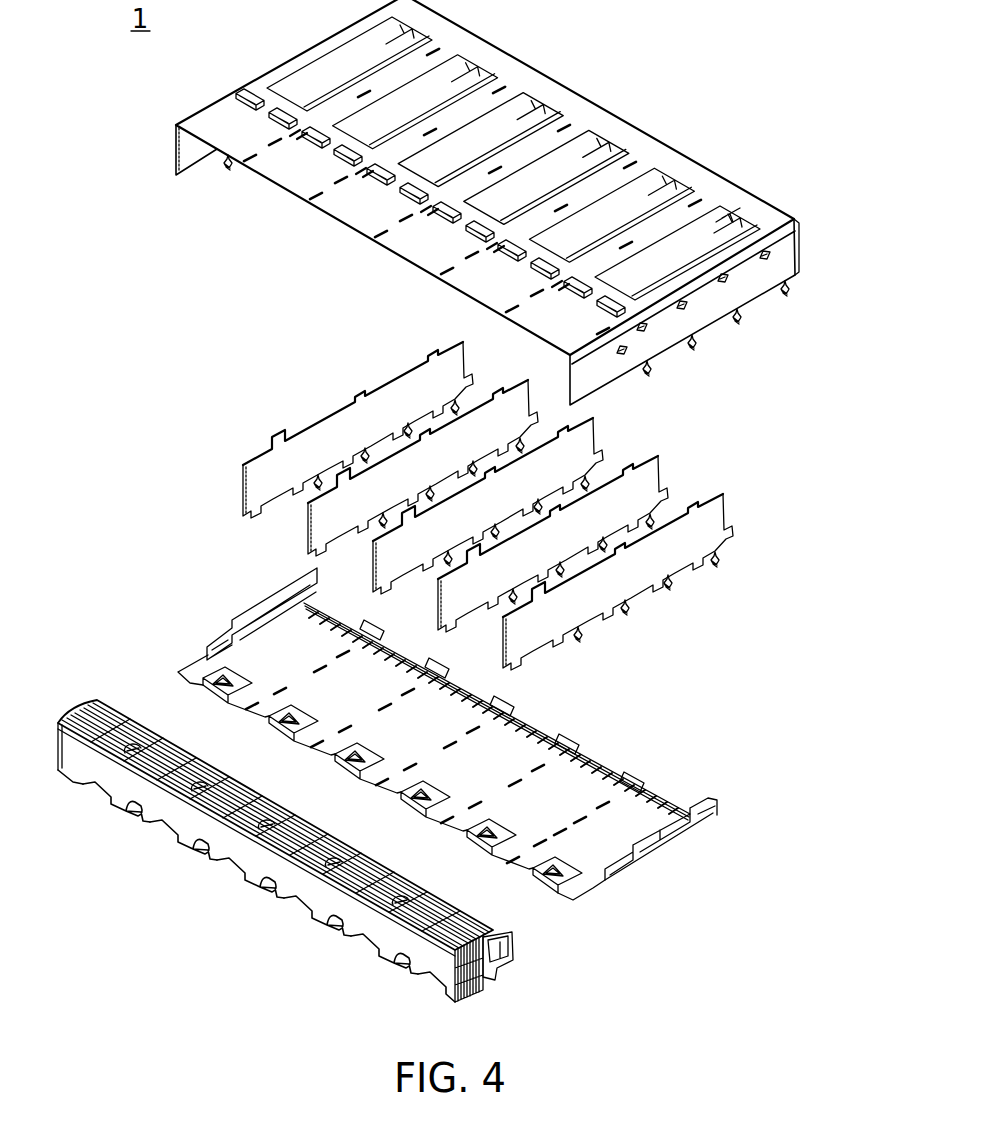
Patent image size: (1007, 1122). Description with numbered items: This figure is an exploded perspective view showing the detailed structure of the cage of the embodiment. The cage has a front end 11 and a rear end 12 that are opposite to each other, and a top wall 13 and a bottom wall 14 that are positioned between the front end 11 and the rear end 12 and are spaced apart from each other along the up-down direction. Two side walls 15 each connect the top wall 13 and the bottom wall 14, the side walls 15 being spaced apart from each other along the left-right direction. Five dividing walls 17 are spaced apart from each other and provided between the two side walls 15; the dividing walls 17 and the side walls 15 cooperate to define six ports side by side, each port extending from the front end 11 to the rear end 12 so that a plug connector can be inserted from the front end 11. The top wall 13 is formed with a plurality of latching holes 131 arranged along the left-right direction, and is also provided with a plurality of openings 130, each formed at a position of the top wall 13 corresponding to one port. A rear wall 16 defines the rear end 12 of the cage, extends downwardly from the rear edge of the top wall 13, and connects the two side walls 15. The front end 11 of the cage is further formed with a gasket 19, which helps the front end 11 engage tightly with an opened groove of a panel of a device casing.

The front end 11 is at (279, 194).
The rear end 12 is at (575, 86).
The top wall 13 is at (348, 212).
The opening 130 is at (637, 207).
The latching hole 131 is at (445, 217).
The bottom wall 14 is at (595, 855).
The side wall 15 is at (185, 146).
The rear wall 16 is at (722, 218).
The dividing wall 17 is at (652, 482).
The gasket 19 is at (117, 742).